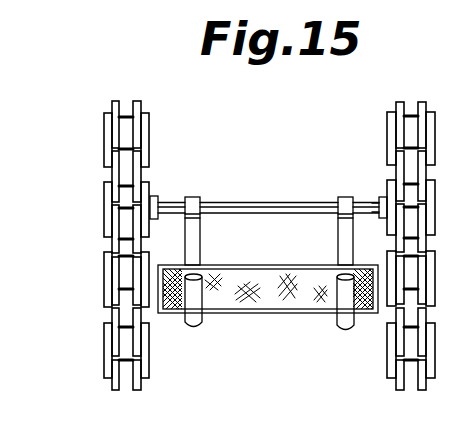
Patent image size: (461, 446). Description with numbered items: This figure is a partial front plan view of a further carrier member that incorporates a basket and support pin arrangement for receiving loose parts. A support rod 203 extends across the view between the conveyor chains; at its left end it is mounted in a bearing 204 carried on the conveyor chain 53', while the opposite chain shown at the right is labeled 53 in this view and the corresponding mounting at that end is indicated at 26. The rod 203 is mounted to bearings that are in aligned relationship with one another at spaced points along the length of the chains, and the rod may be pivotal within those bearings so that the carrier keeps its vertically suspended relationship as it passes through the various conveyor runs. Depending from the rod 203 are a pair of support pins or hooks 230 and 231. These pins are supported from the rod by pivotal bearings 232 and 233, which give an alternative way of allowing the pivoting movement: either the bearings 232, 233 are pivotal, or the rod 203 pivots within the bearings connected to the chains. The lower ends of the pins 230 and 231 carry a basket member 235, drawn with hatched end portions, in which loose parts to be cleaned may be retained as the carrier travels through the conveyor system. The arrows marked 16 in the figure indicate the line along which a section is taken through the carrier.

The conveyor chain 53' is at (110, 225).
The drive chain (right) 53 is at (424, 241).
The support rod 203 is at (280, 212).
The bearing 204 is at (107, 213).
The shaft end connection 26 is at (434, 208).
The pivotal bearing 232 is at (185, 197).
The support pin 231 is at (338, 224).
The pivotal bearing 233 is at (342, 228).
The support pin 230 is at (197, 247).
The basket member 235 is at (297, 318).
The section line 16- 16 is at (367, 253).